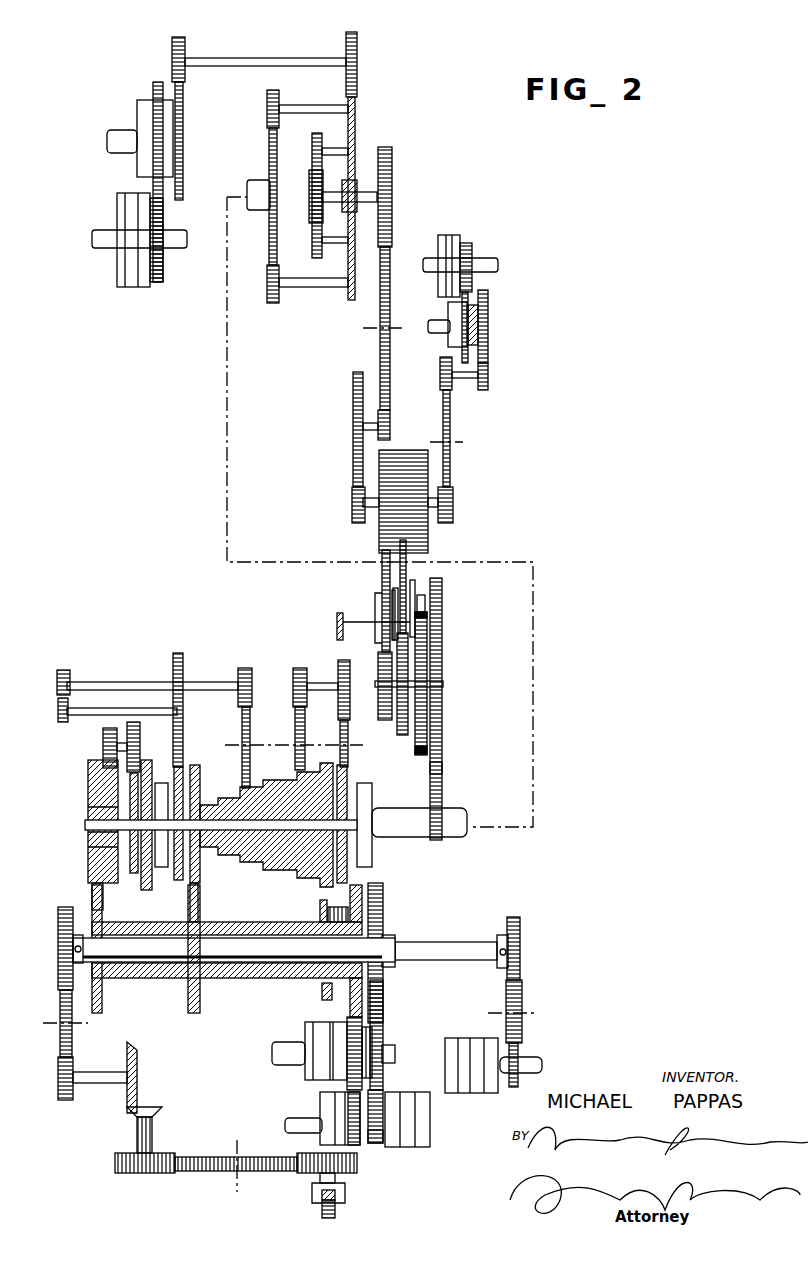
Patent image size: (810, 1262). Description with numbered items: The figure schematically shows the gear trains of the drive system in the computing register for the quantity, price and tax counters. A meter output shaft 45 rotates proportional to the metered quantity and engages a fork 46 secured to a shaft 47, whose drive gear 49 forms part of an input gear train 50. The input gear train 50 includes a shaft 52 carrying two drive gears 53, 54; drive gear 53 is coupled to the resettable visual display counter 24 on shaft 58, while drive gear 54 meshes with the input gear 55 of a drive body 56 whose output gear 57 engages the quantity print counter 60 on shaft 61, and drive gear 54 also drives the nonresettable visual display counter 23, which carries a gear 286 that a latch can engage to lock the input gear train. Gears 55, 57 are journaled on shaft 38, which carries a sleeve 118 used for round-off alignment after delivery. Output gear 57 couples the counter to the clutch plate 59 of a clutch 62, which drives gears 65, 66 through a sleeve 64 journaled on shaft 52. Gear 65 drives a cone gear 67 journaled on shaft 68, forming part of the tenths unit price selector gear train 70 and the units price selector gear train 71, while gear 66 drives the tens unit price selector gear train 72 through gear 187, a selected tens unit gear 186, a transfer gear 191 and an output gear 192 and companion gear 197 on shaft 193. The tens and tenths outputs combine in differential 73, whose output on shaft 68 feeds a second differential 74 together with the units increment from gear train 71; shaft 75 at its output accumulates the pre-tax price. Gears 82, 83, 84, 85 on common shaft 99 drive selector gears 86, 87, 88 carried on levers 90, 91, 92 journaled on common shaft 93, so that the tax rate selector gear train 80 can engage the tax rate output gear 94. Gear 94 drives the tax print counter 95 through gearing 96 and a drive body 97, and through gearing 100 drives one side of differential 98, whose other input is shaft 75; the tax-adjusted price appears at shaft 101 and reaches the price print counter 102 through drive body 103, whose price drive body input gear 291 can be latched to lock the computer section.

The shaft 101 is at (265, 39).
The drive body 103 is at (131, 165).
The price drive body input gear 291 is at (200, 118).
The shaft 38 is at (255, 597).
The shaft 61 is at (276, 674).
The price print counter 102 is at (118, 253).
The shaft 75 is at (254, 196).
The differential 98 is at (341, 166).
The tax print counter 95 is at (455, 277).
The drive body 97 is at (486, 339).
The gearing 96 is at (470, 440).
The gearing 100 is at (347, 335).
The tax rate output gear 94 is at (389, 502).
The selector gear 86 is at (444, 577).
The selector gear 87 is at (427, 591).
The selector gear 88 is at (367, 635).
The lever 90 is at (441, 593).
The lever 92 is at (356, 613).
The common shaft 93 is at (361, 629).
The lever 91 is at (375, 624).
The tax rate selector gear train 80 is at (456, 709).
The gear 82 is at (451, 758).
The gear 83 is at (420, 704).
The gear 84 is at (396, 657).
The gear 85 is at (306, 742).
The common shaft 99 is at (399, 704).
The differential 74 is at (412, 825).
The units price selector gear train 71 is at (321, 771).
The tenths unit price selector gear train 70 is at (154, 718).
The tens unit gear 186 is at (82, 748).
The transfer gear 191 is at (147, 747).
The output gear 192 is at (195, 766).
The tens unit price selector gear train 72 is at (74, 817).
The companion gear 197 is at (96, 823).
The shaft 193 is at (190, 822).
The gear 187 is at (83, 858).
The shaft 68 is at (208, 843).
The cone gear 67 is at (266, 828).
The differential 73 is at (159, 833).
The clutch plate 59 is at (315, 903).
The clutch 62 is at (298, 911).
The drive gear 54 is at (381, 953).
The shaft 52 is at (445, 940).
The drive gear 53 is at (526, 989).
The shaft 58 is at (531, 1050).
The visual display counter 24 is at (471, 1050).
The gear 66 is at (116, 949).
The sleeve 64 is at (234, 973).
The gear 65 is at (212, 949).
The input gear train 50 is at (96, 1030).
The drive gear 49 is at (236, 1154).
The shaft 47 is at (306, 1187).
The fork 46 is at (347, 1188).
The output shaft 45 is at (297, 1207).
The sleeve 118 is at (303, 1042).
The output gear 57 is at (328, 1036).
The drive body 56 is at (392, 1054).
The input gear 55 is at (389, 1061).
The quantity print counter 60 is at (319, 1112).
The nonresettable visual display counter 23 is at (420, 1119).
The gear 286 is at (393, 1151).